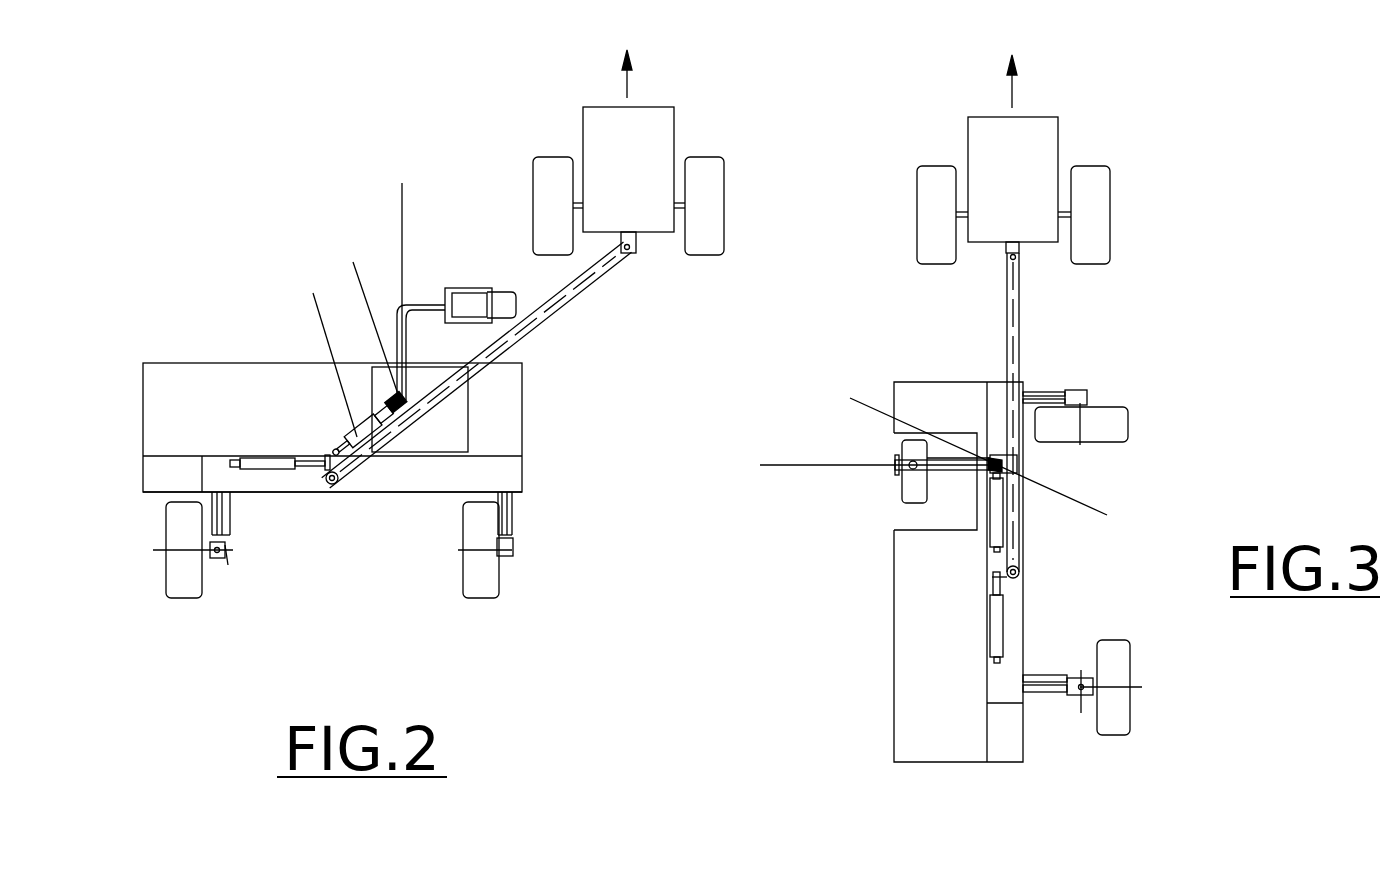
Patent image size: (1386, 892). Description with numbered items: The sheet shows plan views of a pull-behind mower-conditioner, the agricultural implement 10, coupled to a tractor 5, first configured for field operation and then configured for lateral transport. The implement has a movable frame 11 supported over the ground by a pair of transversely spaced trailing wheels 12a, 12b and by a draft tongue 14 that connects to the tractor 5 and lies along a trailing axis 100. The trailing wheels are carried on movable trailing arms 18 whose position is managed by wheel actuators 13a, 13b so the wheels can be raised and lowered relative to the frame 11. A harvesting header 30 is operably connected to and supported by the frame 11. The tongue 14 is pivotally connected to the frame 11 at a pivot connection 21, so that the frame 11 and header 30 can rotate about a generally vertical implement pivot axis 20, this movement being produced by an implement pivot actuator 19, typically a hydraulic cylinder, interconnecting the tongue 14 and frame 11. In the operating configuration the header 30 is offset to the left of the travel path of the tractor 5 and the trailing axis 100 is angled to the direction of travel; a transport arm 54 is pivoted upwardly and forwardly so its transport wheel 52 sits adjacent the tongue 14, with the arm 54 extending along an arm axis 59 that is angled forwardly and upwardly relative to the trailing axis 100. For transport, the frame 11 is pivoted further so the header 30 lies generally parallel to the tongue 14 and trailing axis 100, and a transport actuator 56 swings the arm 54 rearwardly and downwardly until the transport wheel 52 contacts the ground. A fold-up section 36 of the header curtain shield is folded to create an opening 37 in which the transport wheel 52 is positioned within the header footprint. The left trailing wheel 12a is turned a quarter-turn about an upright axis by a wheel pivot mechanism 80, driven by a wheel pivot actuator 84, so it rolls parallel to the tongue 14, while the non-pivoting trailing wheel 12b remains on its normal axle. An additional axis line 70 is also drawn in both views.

In FIG. 2, the tractor 5 is at (694, 90).
In FIG. 3, the tractor 5 is at (1095, 90).
In FIG. 2, the agricultural implement 10 is at (556, 463).
In FIG. 2, the frame 11 is at (412, 480).
In FIG. 3, the frame 11 is at (1017, 595).
In FIG. 2, the pivoting trailing wheel 12a is at (175, 580).
In FIG. 3, the pivoting trailing wheel 12a is at (1110, 730).
In FIG. 2, the non-pivoting trailing wheel 12b is at (495, 593).
In FIG. 3, the non-pivoting trailing wheel 12b is at (1117, 430).
In FIG. 2, the wheel actuator 13a is at (215, 500).
In FIG. 3, the wheel actuator 13a is at (1045, 692).
In FIG. 2, the wheel actuator 13b is at (510, 510).
In FIG. 3, the wheel actuator 13b is at (1047, 400).
In FIG. 2, the draft tongue 14 is at (542, 325).
In FIG. 3, the draft tongue 14 is at (1005, 345).
In FIG. 2, the trailing arm 18 is at (515, 560).
In FIG. 3, the trailing arm 18 is at (1088, 392).
In FIG. 2, the implement pivot actuator 19 is at (258, 455).
In FIG. 3, the implement pivot actuator 19 is at (997, 622).
In FIG. 2, the implement pivot axis 20 is at (322, 488).
In FIG. 2, the pivot connection 21 is at (342, 488).
In FIG. 2, the harvesting header 30 is at (193, 365).
In FIG. 3, the harvesting header 30 is at (915, 620).
In FIG. 2, the fold-up section 36 is at (456, 427).
In FIG. 3, the opening 37 is at (955, 514).
In FIG. 2, the transport wheel 52 is at (500, 302).
In FIG. 3, the transport wheel 52 is at (912, 490).
In FIG. 2, the transport arm 54 is at (405, 300).
In FIG. 3, the transport arm 54 is at (963, 465).
In FIG. 2, the transport actuator 56 is at (355, 435).
In FIG. 3, the transport actuator 56 is at (1000, 515).
In FIG. 2, the arm axis 59 is at (400, 222).
In FIG. 3, the arm axis 59 is at (805, 465).
In FIG. 2, the pivot axis 70 is at (353, 262).
In FIG. 3, the pivot axis 70 is at (1077, 498).
In FIG. 2, the wheel pivot mechanism 80 is at (220, 580).
In FIG. 3, the wheel pivot mechanism 80 is at (1096, 670).
In FIG. 2, the wheel pivot actuator 84 is at (227, 507).
In FIG. 3, the wheel pivot actuator 84 is at (1045, 675).
In FIG. 2, the trailing axis 100 is at (577, 290).
In FIG. 3, the trailing axis 100 is at (1015, 285).